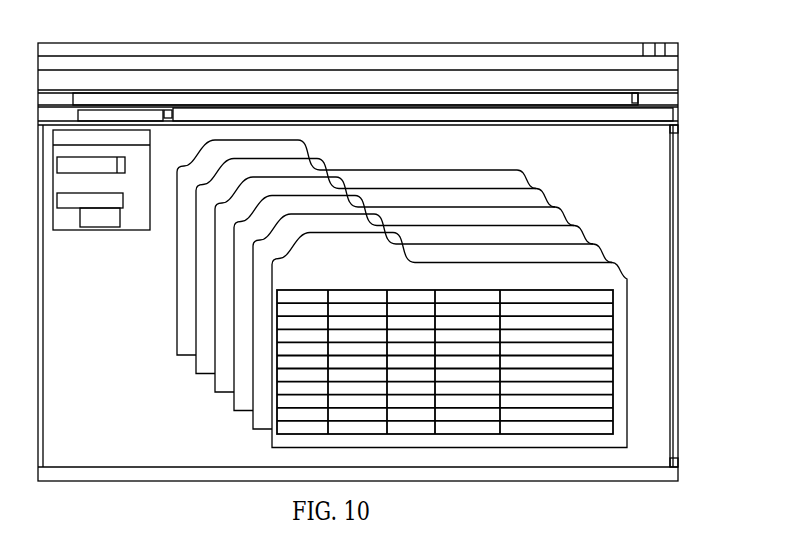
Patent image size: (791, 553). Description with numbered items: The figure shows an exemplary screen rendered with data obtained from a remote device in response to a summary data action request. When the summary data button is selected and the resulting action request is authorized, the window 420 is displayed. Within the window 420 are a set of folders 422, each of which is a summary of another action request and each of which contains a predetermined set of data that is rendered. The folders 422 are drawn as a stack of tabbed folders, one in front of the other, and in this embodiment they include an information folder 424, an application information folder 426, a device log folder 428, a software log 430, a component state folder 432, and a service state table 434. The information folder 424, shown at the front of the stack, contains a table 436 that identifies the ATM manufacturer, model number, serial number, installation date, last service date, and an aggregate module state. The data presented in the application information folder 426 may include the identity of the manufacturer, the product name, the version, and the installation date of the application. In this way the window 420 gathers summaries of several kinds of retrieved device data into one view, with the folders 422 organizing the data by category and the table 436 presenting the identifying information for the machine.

The window 420 is at (644, 42).
The folders 422 is at (372, 304).
The information folder 424 is at (273, 437).
The application information folder 426 is at (253, 420).
The device log folder 428 is at (235, 400).
The software log 430 is at (215, 380).
The component state folder 432 is at (197, 360).
The service state table 434 is at (177, 333).
The table 436 is at (617, 265).